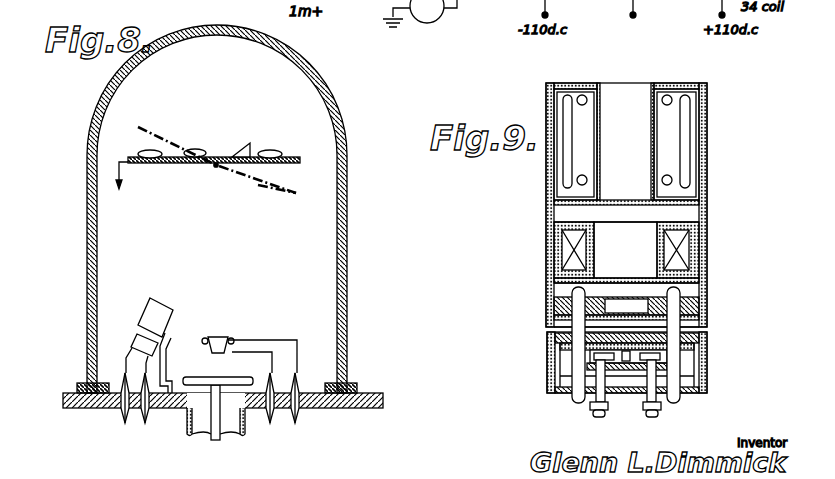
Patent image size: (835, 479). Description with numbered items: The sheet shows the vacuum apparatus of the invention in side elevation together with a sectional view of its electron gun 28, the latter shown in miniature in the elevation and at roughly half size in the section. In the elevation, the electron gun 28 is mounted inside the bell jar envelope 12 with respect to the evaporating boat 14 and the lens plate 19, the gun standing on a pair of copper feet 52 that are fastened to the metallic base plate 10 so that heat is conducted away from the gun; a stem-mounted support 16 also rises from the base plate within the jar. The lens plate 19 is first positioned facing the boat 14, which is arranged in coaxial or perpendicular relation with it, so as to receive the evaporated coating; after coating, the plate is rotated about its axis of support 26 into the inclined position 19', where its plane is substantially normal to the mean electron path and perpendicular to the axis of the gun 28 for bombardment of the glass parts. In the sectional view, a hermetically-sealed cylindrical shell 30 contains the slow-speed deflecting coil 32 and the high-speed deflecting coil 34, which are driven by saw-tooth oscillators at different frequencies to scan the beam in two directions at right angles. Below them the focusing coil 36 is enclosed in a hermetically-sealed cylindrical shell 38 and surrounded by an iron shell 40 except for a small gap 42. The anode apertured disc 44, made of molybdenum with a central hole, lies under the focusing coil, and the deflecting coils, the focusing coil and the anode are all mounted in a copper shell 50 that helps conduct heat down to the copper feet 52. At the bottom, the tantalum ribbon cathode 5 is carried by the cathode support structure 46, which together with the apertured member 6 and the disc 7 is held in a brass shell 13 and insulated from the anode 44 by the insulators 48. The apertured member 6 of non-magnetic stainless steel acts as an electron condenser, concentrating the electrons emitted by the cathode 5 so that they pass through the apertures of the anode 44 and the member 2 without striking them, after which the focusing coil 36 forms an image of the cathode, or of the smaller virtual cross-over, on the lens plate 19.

In FIG. 8, the metallic base plate 10 is at (342, 408).
In FIG. 8, the envelope 12 is at (346, 288).
In FIG. 8, the evaporating boat 14 is at (228, 338).
In FIG. 8, the anode plate on stem 16 is at (226, 351).
In FIG. 8, the lens plate 19 is at (210, 168).
In FIG. 8, the inclined position of lens plate 19' is at (287, 203).
In FIG. 8, the axis of support 26 is at (216, 167).
In FIG. 8, the electron gun 28 is at (150, 312).
In FIG. 9, the electron gun 28 is at (743, 193).
In FIG. 8, the copper feet 52 is at (162, 378).
In FIG. 9, the anode aperture member 2 is at (703, 304).
In FIG. 9, the cathode 5 is at (622, 312).
In FIG. 9, the apertured member 6 is at (707, 338).
In FIG. 9, the disc 7 is at (707, 354).
In FIG. 9, the brass shell 13 is at (707, 376).
In FIG. 9, the hermetically-sealed cylindrical shell 30 is at (697, 86).
In FIG. 9, the slow-speed deflecting coil 32 is at (652, 98).
In FIG. 9, the high-speed deflecting coil 34 is at (580, 95).
In FIG. 9, the focusing coil 36 is at (700, 248).
In FIG. 9, the hermetically-sealed cylindrical shell 38 is at (702, 227).
In FIG. 9, the iron shell 40 is at (705, 283).
In FIG. 9, the gap 42 is at (653, 263).
In FIG. 9, the anode apertured disc 44 is at (697, 328).
In FIG. 9, the cathode support structure 46 is at (548, 381).
In FIG. 9, the insulators 48 is at (577, 403).
In FIG. 9, the copper shell 50 is at (548, 286).